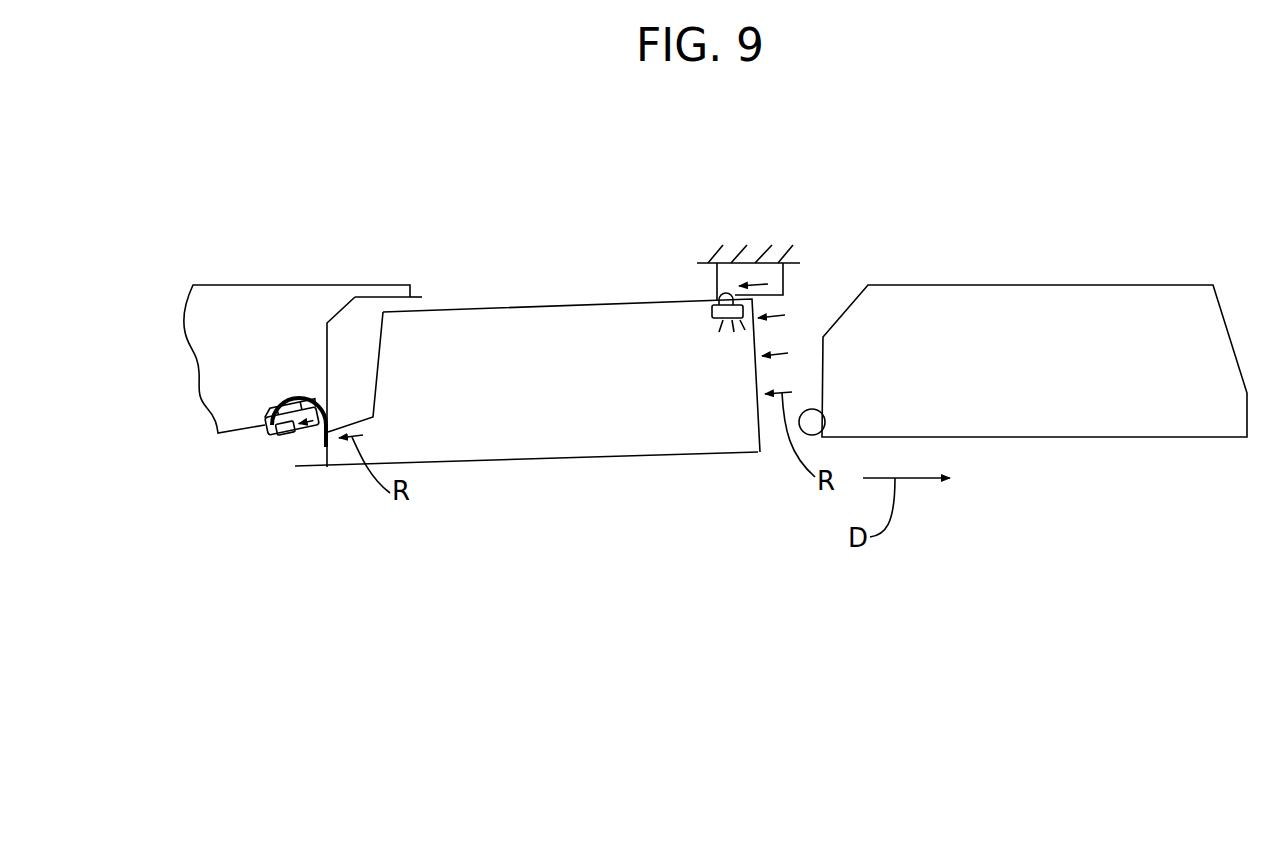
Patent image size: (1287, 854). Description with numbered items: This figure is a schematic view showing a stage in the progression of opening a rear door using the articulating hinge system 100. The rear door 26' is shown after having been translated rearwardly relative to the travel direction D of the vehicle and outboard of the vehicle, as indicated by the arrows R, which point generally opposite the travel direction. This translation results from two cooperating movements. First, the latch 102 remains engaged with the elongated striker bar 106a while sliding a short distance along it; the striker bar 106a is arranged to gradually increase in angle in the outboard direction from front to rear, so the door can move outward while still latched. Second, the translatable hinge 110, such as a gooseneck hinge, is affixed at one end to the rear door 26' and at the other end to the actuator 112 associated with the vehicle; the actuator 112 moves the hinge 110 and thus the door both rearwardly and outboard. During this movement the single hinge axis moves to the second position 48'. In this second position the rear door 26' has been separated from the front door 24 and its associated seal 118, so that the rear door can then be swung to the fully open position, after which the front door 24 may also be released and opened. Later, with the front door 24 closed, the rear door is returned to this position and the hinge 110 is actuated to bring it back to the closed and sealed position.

The articulating hinge system 100 is at (507, 256).
The front door 24 is at (1050, 295).
The rear door 26' is at (544, 425).
The second position of the hinge axis 48' is at (303, 359).
The latch 102 is at (718, 323).
The elongated striker bar 106a is at (715, 277).
The translatable hinge 110 is at (296, 398).
The actuator 112 is at (272, 440).
The seal 118 is at (812, 410).